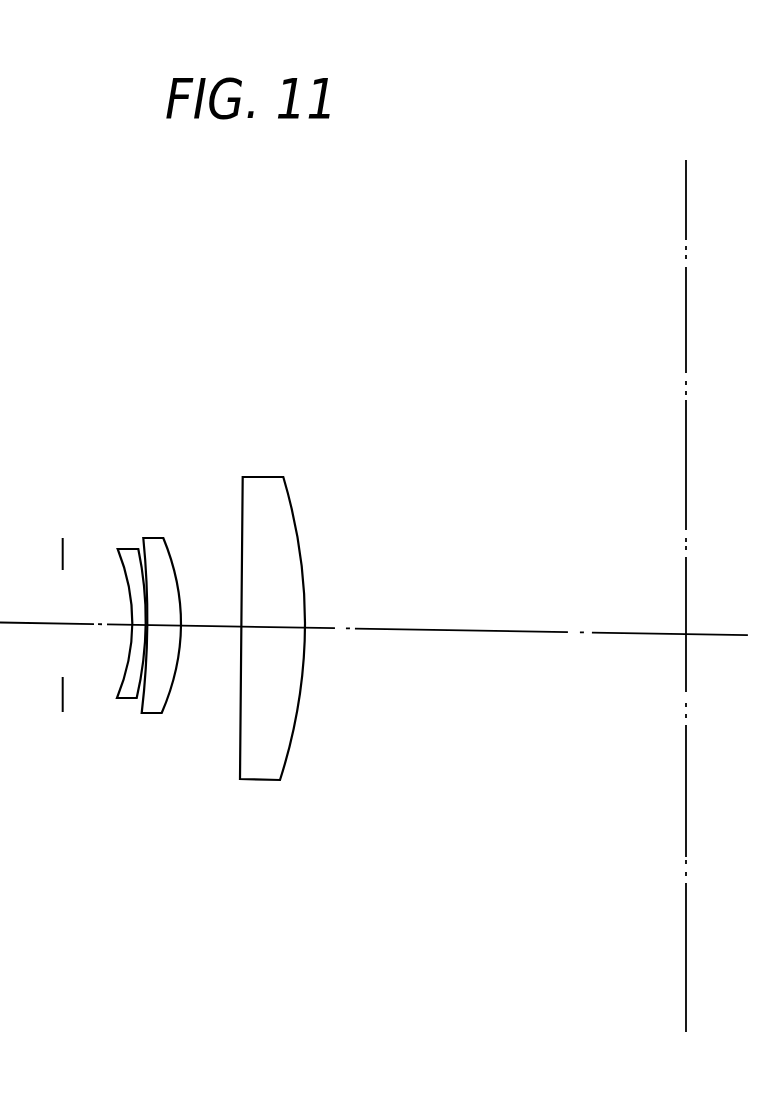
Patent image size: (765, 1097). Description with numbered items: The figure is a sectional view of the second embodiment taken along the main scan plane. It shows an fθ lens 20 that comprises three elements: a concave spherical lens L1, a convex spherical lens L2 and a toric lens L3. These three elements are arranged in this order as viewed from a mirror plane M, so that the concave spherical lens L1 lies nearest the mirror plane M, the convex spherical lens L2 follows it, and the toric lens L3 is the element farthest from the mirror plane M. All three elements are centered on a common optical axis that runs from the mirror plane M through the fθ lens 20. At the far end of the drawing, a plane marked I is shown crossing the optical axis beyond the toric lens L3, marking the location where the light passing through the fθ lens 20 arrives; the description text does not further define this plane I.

The fθ lens 20 is at (204, 486).
The concave spherical lens L1 is at (130, 661).
The convex spherical lens L2 is at (163, 656).
The toric lens L3 is at (272, 653).
The mirror plane M is at (65, 608).
The image plane I is at (674, 591).